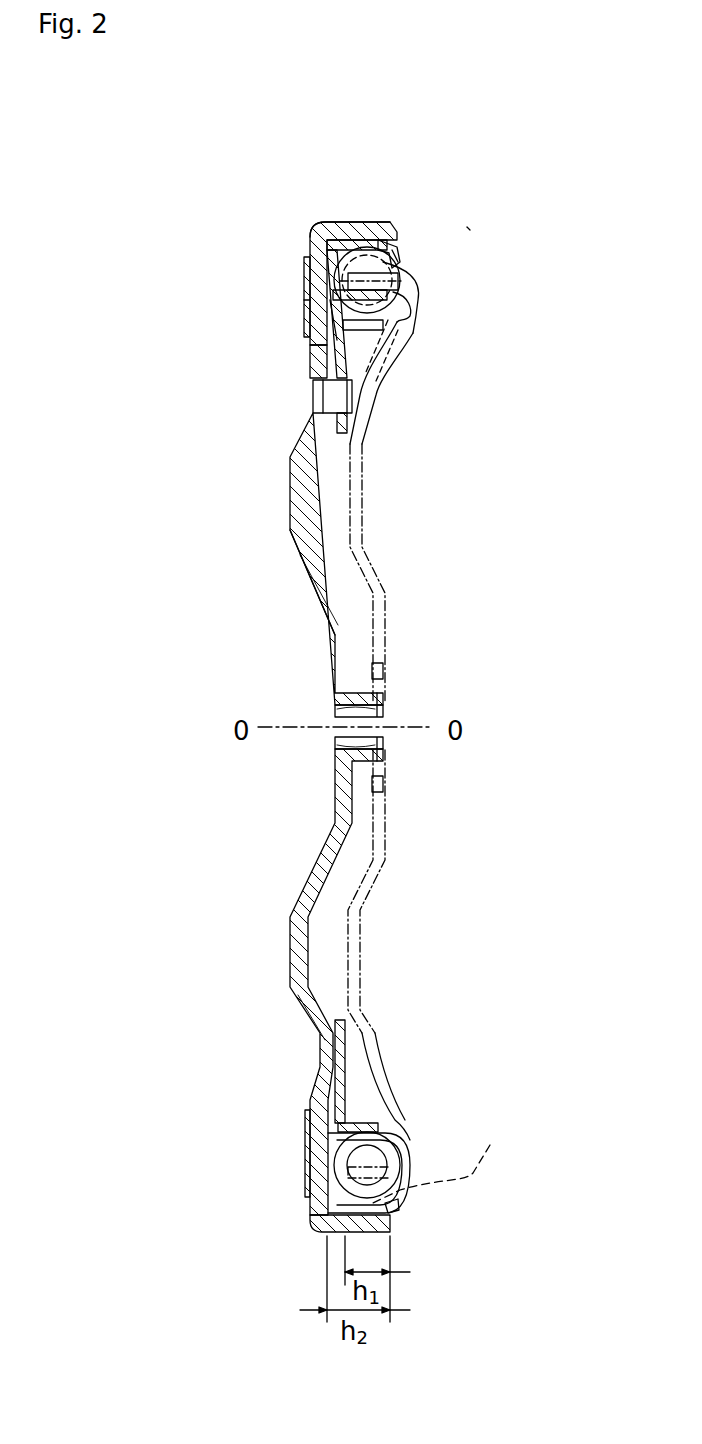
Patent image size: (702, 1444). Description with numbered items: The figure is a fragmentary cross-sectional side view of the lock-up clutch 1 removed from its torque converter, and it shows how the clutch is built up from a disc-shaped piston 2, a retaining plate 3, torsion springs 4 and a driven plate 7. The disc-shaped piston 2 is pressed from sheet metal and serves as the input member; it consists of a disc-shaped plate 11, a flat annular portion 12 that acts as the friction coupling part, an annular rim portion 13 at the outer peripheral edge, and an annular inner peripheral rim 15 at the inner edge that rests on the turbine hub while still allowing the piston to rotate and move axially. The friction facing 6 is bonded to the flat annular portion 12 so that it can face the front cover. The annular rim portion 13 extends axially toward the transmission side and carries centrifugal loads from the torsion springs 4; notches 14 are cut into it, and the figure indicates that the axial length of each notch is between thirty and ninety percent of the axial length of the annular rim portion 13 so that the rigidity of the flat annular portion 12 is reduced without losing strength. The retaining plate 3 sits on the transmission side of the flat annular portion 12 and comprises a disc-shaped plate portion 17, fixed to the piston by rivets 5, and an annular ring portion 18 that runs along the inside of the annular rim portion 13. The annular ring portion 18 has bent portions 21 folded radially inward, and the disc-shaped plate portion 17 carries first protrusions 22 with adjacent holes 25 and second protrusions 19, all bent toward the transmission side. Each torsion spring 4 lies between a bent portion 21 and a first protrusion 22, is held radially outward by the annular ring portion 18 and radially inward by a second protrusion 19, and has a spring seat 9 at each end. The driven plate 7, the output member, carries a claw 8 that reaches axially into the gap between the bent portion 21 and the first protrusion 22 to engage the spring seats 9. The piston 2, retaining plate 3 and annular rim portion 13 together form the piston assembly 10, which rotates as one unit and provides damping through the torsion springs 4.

The lock-up clutch 1 is at (467, 227).
The disc-shaped piston 2 is at (282, 515).
The retaining plate 3 is at (353, 360).
The torsion springs 4 is at (400, 250).
The rivets 5 is at (330, 397).
The friction facing 6 is at (306, 300).
The driven plate 7 is at (358, 508).
The claw 8 is at (357, 277).
The spring seat 9 is at (370, 1153).
The lock-up clutch piston assembly 10 is at (315, 207).
The disc-shaped plate 11 is at (320, 588).
The flat annular portion 12 is at (306, 283).
The annular rim portion 13 is at (352, 208).
The notches 14 is at (368, 227).
The annular inner peripheral rim 15 is at (385, 700).
The disc-shaped plate portion 17 is at (335, 350).
The annular ring portion 18 is at (395, 242).
The second protrusions 19 is at (400, 318).
The bent portions 21 is at (398, 260).
The first protrusions 22 is at (561, 343).
The holes 25 is at (333, 340).